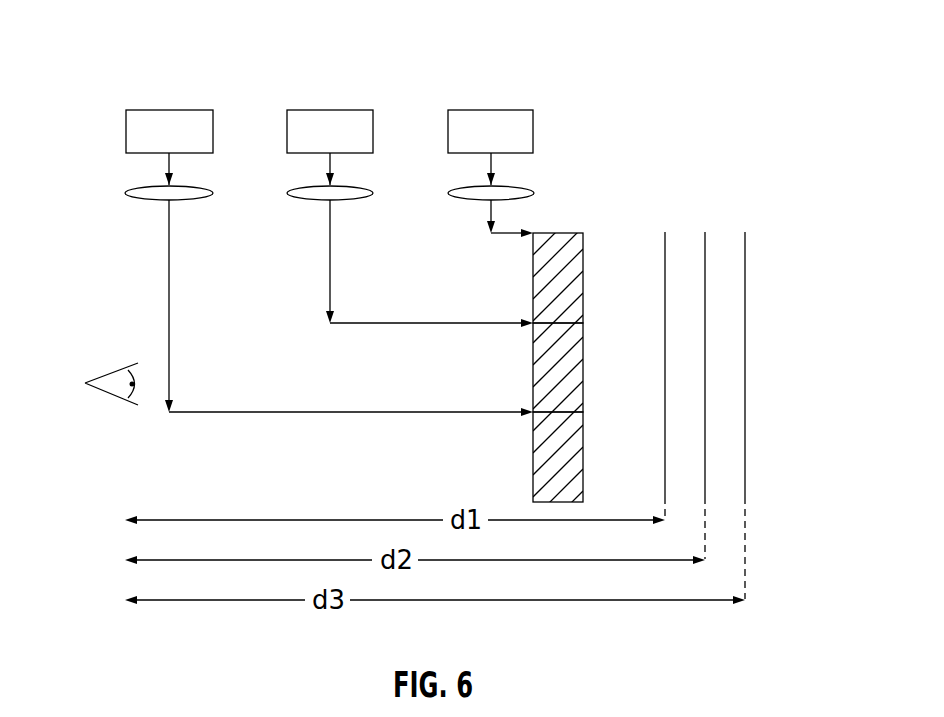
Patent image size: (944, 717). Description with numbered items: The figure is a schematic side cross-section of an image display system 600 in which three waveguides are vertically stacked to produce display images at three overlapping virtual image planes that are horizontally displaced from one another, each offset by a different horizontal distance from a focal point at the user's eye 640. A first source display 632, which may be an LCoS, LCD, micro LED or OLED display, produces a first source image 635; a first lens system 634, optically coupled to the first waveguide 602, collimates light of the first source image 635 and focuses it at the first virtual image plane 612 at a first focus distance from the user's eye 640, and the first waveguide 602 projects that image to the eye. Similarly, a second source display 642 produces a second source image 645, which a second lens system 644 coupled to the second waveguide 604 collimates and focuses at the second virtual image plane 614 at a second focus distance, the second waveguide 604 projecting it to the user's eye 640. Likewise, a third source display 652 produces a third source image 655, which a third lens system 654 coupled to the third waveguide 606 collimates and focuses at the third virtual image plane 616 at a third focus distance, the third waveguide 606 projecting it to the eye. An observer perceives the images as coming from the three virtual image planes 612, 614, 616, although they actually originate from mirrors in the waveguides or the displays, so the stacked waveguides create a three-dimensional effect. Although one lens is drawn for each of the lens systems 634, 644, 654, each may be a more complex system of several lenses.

The image display system 600 is at (672, 44).
The first waveguide 602 is at (533, 278).
The second waveguide 604 is at (533, 368).
The third waveguide 606 is at (533, 458).
The first virtual image plane 612 is at (663, 246).
The second virtual image plane 614 is at (706, 316).
The third virtual image plane 616 is at (746, 262).
The first source display 632 is at (493, 110).
The first lens system 634 is at (486, 200).
The first source image 635 is at (496, 160).
The user's eye 640 is at (128, 372).
The second source display 642 is at (327, 110).
The second lens system 644 is at (325, 199).
The second source image 645 is at (325, 160).
The third source display 652 is at (167, 110).
The third lens system 654 is at (163, 199).
The third source image 655 is at (164, 160).